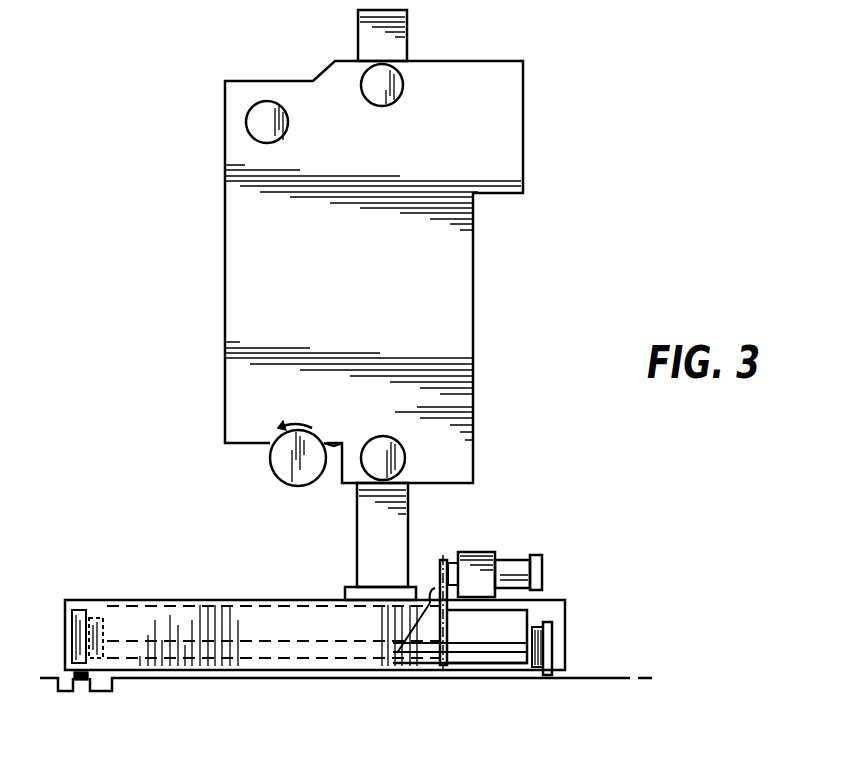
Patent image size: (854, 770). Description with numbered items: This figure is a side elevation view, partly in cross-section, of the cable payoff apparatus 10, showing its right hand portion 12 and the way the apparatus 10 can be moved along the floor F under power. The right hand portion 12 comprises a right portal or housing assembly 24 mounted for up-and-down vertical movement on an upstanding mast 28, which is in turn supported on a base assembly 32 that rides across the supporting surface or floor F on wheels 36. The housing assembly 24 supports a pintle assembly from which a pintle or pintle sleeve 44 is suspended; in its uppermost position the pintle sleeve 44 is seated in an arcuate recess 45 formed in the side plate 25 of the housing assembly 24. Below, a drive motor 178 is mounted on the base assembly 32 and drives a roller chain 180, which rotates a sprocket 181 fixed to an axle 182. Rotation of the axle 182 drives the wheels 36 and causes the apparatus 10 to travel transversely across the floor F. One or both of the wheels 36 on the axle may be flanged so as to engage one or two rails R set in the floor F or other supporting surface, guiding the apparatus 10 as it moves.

The cable payoff apparatus 10 is at (572, 103).
The right hand portion 12 is at (518, 330).
The right portal or housing assembly 24 is at (484, 245).
The side plate 25 is at (348, 259).
The upstanding mast 28 is at (373, 522).
The base assembly 32 is at (165, 576).
The wheels 36 is at (82, 603).
The pintle sleeve 44 is at (285, 463).
The arcuate recess 45 is at (328, 440).
The drive motor 178 is at (515, 560).
The roller chain 180 is at (452, 627).
The sprocket 181 is at (432, 660).
The axle 182 is at (480, 650).
The floor F is at (615, 675).
The rails R is at (83, 683).